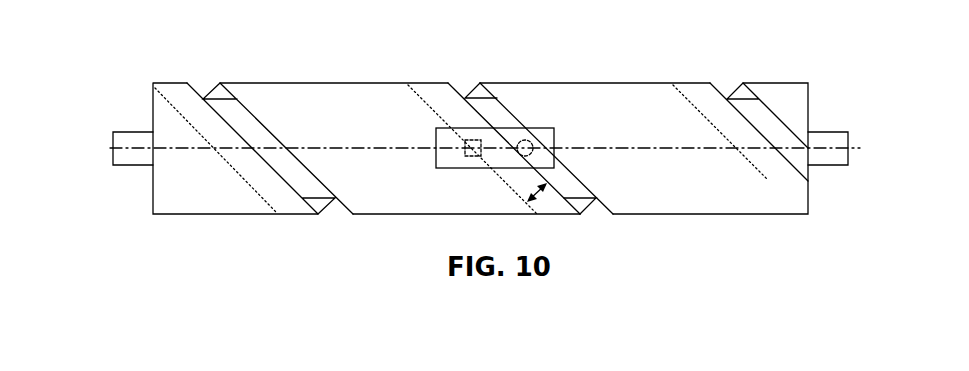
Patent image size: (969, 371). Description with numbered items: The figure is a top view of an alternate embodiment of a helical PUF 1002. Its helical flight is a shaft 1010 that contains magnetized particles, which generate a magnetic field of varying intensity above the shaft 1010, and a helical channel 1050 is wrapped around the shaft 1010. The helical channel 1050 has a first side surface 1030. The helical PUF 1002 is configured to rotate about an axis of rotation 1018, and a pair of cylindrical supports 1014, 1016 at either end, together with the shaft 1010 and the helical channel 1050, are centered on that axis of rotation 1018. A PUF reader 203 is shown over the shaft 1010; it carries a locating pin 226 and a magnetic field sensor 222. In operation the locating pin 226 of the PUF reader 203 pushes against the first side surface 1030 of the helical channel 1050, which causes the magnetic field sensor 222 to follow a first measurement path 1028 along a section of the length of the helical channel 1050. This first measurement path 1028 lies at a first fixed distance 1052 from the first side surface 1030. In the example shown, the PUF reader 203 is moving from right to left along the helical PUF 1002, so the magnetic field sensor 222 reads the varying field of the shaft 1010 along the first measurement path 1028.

The helical PUF 1002 is at (138, 43).
The shaft 1010 is at (330, 83).
The cylindrical support 1014 is at (130, 165).
The cylindrical support 1016 is at (820, 132).
The axis of rotation 1018 is at (110, 148).
The first measurement path 1028 is at (430, 107).
The first side surface 1030 is at (484, 110).
The helical channel 1050 is at (468, 72).
The first fixed distance 1052 is at (534, 192).
The PUF reader 203 is at (470, 165).
The magnetic field sensor 222 is at (465, 157).
The locating pin 226 is at (533, 152).